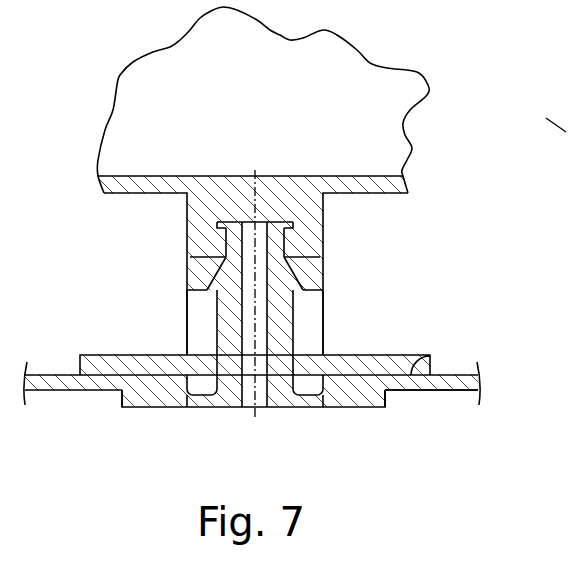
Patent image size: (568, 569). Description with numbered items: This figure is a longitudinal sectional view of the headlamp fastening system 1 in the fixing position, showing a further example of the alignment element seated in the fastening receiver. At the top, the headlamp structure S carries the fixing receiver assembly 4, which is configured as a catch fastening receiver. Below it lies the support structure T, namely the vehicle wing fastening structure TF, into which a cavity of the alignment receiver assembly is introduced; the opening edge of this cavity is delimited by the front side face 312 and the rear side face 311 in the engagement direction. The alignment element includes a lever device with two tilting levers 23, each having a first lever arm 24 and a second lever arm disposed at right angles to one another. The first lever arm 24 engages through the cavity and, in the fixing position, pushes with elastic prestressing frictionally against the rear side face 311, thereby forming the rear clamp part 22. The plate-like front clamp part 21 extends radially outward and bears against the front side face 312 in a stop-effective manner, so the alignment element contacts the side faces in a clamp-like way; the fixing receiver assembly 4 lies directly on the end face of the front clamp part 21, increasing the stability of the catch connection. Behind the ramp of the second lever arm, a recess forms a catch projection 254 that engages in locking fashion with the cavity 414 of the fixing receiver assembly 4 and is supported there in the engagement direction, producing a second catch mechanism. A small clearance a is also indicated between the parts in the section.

The headlamp structure S is at (417, 72).
The headlamp fastening system 1 is at (462, 106).
The fixing receiver assembly 4 is at (352, 207).
The cavity 414 is at (203, 263).
The catch projection 254 is at (207, 288).
The front clamp part 21 is at (393, 355).
The tilting lever 23 is at (187, 305).
The front side face 312 is at (404, 376).
The rear side face 311 is at (355, 390).
The rear clamp part 22 is at (121, 398).
The first lever arm 24 is at (173, 407).
The gap a is at (108, 403).
The support structure T is at (478, 405).
The vehicle wing fastening structure TF is at (482, 386).